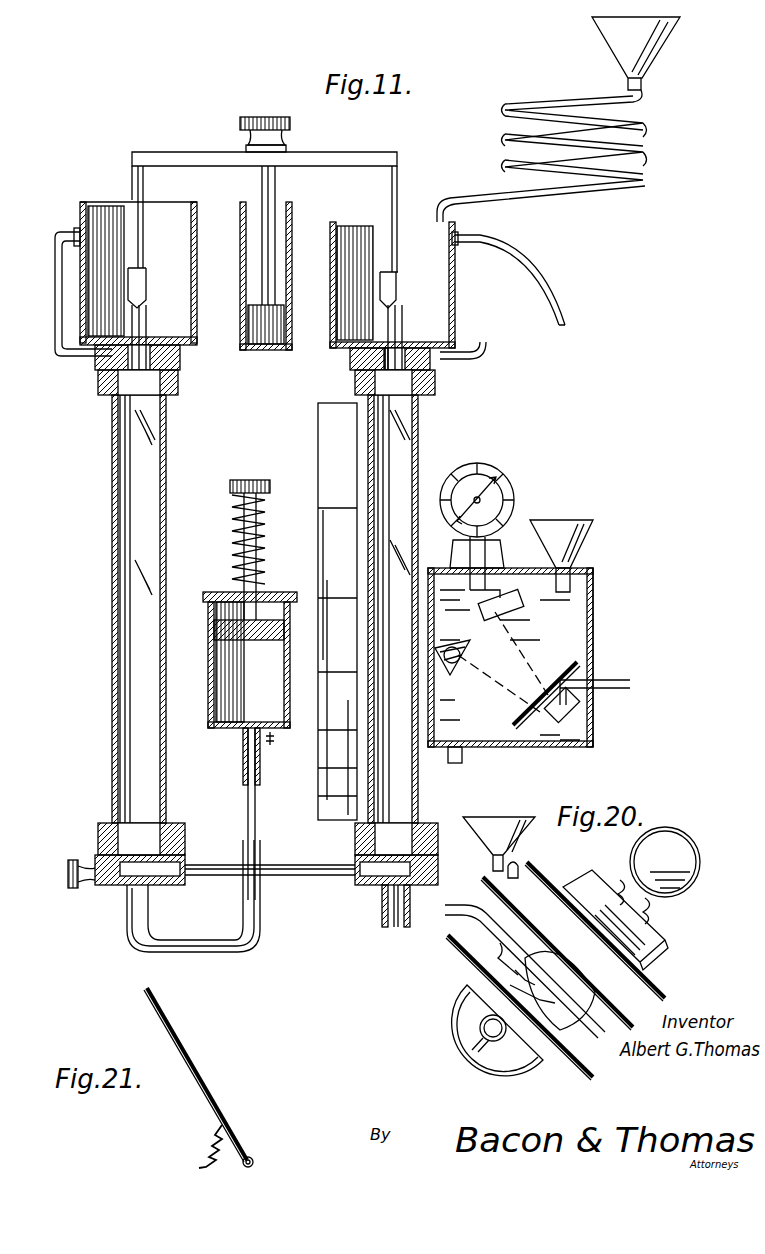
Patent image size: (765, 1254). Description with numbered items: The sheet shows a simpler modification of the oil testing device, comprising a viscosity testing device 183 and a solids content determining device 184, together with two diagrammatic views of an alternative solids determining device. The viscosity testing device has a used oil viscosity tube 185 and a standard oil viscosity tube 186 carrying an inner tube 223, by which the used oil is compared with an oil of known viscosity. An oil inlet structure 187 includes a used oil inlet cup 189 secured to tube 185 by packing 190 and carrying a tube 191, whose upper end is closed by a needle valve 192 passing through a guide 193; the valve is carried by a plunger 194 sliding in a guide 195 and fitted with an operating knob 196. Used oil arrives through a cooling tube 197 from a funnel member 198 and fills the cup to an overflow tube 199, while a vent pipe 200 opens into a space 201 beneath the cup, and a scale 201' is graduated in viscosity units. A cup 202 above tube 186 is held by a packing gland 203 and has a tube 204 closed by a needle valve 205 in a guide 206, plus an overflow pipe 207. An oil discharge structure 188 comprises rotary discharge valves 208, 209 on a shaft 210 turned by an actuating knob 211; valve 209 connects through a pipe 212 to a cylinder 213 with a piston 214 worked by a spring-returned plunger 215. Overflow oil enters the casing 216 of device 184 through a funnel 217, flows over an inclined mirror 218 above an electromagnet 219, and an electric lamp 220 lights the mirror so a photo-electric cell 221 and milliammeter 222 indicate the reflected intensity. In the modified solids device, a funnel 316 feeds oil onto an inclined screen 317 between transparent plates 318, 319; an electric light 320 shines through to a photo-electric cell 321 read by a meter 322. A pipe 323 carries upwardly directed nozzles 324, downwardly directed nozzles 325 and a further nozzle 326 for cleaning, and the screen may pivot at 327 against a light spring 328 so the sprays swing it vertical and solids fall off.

In FIG. 11, the viscosity testing device 183 is at (105, 603).
In FIG. 11, the solids content determining device 184 is at (603, 646).
In FIG. 11, the used oil viscosity tube 185 is at (419, 446).
In FIG. 11, the standard oil viscosity tube 186 is at (112, 456).
In FIG. 11, the oil inlet structure 187 is at (88, 183).
In FIG. 11, the oil discharge structure 188 is at (334, 916).
In FIG. 11, the used oil inlet cup 189 is at (456, 318).
In FIG. 11, the packing 190 is at (430, 386).
In FIG. 11, the tube 191 is at (405, 312).
In FIG. 11, the needle valve 192 is at (398, 205).
In FIG. 11, the guide 193 is at (386, 268).
In FIG. 11, the plunger 194 is at (278, 192).
In FIG. 11, the guide 195 is at (291, 296).
In FIG. 11, the operating knob 196 is at (262, 117).
In FIG. 11, the cooling tube 197 is at (642, 186).
In FIG. 11, the funnel member 198 is at (672, 62).
In FIG. 11, the overflow tube 199 is at (520, 270).
In FIG. 11, the vent pipe 200 is at (488, 354).
In FIG. 11, the space 201 is at (344, 363).
In FIG. 11, the scale 201' is at (320, 611).
In FIG. 11, the cup 202 is at (80, 206).
In FIG. 11, the packing gland 203 is at (93, 384).
In FIG. 11, the tube 204 is at (132, 324).
In FIG. 11, the needle valve 205 is at (132, 188).
In FIG. 11, the guide 206 is at (128, 270).
In FIG. 11, the overflow pipe 207 is at (57, 297).
In FIG. 11, the rotary discharge valve 208 is at (375, 886).
In FIG. 11, the rotary discharge valve 209 is at (112, 884).
In FIG. 11, the shaft 210 is at (305, 876).
In FIG. 11, the actuating knob 211 is at (68, 880).
In FIG. 11, the pipe 212 is at (200, 950).
In FIG. 11, the cylinder 213 is at (208, 682).
In FIG. 11, the piston 214 is at (214, 632).
In FIG. 11, the spring-returned plunger 215 is at (248, 480).
In FIG. 11, the casing 216 is at (600, 604).
In FIG. 11, the funnel 217 is at (593, 540).
In FIG. 11, the mirror 218 is at (578, 668).
In FIG. 11, the electromagnet 219 is at (578, 711).
In FIG. 11, the electric lamp 220 is at (462, 677).
In FIG. 11, the photo-electric cell 221 is at (510, 588).
In FIG. 11, the milliammeter 222 is at (506, 480).
In FIG. 11, the inner tube 223 is at (124, 592).
In FIG. 20, the inlet tube or funnel 316 is at (522, 841).
In FIG. 20, the inclined screen 317 is at (540, 940).
In FIG. 21, the inclined screen 317 is at (215, 1090).
In FIG. 20, the transparent plate 318 is at (655, 982).
In FIG. 20, the transparent plate 319 is at (470, 975).
In FIG. 20, the electric light 320 is at (484, 1031).
In FIG. 20, the photo-electric cell 321 is at (650, 933).
In FIG. 20, the meter 322 is at (701, 858).
In FIG. 20, the pipe 323 is at (470, 942).
In FIG. 20, the upwardly directed nozzles 324 is at (572, 974).
In FIG. 20, the downwardly directed nozzles 325 is at (514, 956).
In FIG. 20, the nozzle 326 is at (514, 880).
In FIG. 21, the pivot 327 is at (252, 1157).
In FIG. 21, the light spring 328 is at (210, 1130).